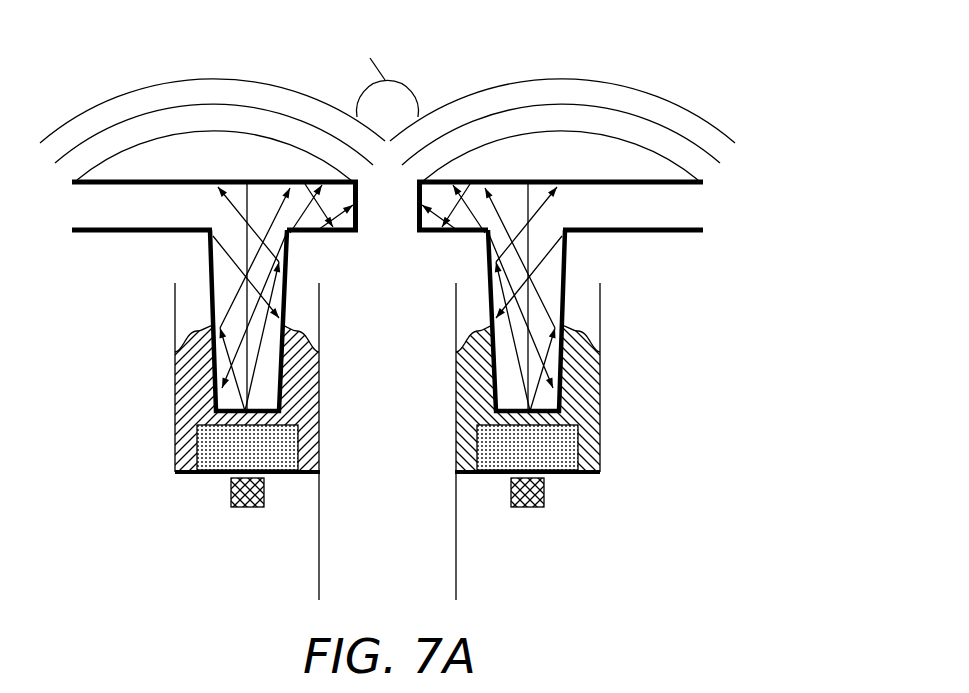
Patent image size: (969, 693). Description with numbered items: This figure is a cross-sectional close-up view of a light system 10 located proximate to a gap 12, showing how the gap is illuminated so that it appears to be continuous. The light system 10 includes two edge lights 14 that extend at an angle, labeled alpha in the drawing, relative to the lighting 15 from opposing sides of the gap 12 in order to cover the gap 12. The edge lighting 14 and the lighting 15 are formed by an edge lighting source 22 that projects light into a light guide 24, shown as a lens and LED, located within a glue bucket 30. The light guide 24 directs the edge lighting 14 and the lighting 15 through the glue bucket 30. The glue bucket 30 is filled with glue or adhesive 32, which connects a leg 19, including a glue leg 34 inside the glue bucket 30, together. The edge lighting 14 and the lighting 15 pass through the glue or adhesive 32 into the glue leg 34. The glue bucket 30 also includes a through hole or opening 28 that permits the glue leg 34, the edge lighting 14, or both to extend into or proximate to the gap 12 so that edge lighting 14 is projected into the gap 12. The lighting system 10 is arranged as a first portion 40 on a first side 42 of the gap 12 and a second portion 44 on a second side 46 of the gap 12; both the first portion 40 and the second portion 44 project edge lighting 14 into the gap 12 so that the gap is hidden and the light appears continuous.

The light system 10 is at (734, 218).
The gap 12 is at (394, 273).
The edge lighting 14 is at (395, 65).
The lighting 15 is at (212, 77).
The leg 19 is at (178, 180).
The edge lighting source 22 is at (237, 509).
The light guide 24 is at (270, 453).
The opening 28 is at (320, 270).
The glue bucket 30 is at (197, 440).
The glue or adhesive 32 is at (200, 388).
The glue leg 34 is at (208, 266).
The first portion 40 is at (146, 507).
The first side 42 is at (174, 559).
The second portion 44 is at (642, 509).
The second side 46 is at (609, 554).